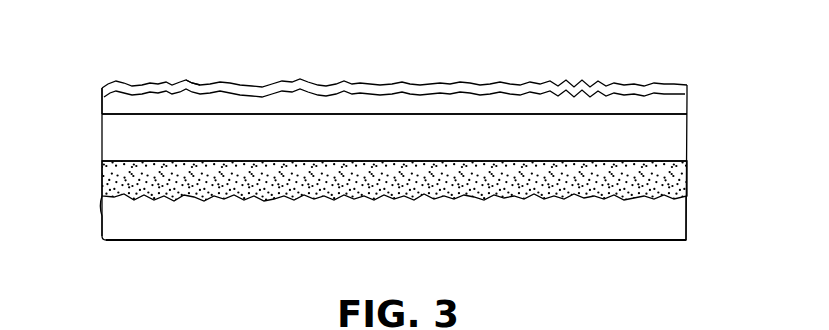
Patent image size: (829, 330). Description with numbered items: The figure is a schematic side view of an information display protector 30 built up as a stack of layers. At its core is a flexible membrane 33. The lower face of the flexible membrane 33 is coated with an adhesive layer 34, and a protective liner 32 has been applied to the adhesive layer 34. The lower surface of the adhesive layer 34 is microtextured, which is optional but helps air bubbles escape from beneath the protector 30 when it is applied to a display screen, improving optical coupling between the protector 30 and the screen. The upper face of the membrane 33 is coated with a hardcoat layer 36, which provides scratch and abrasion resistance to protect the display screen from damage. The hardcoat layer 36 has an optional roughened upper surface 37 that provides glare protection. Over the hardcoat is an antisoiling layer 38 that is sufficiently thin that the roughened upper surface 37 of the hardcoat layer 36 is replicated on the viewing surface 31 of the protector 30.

The information display protector 30 is at (604, 57).
The viewing surface 31 is at (196, 87).
The protective liner 32 is at (675, 213).
The flexible membrane 33 is at (678, 123).
The adhesive layer 34 is at (677, 182).
The hardcoat layer 36 is at (672, 104).
The roughened upper surface 37 is at (101, 107).
The antisoiling layer 38 is at (689, 86).